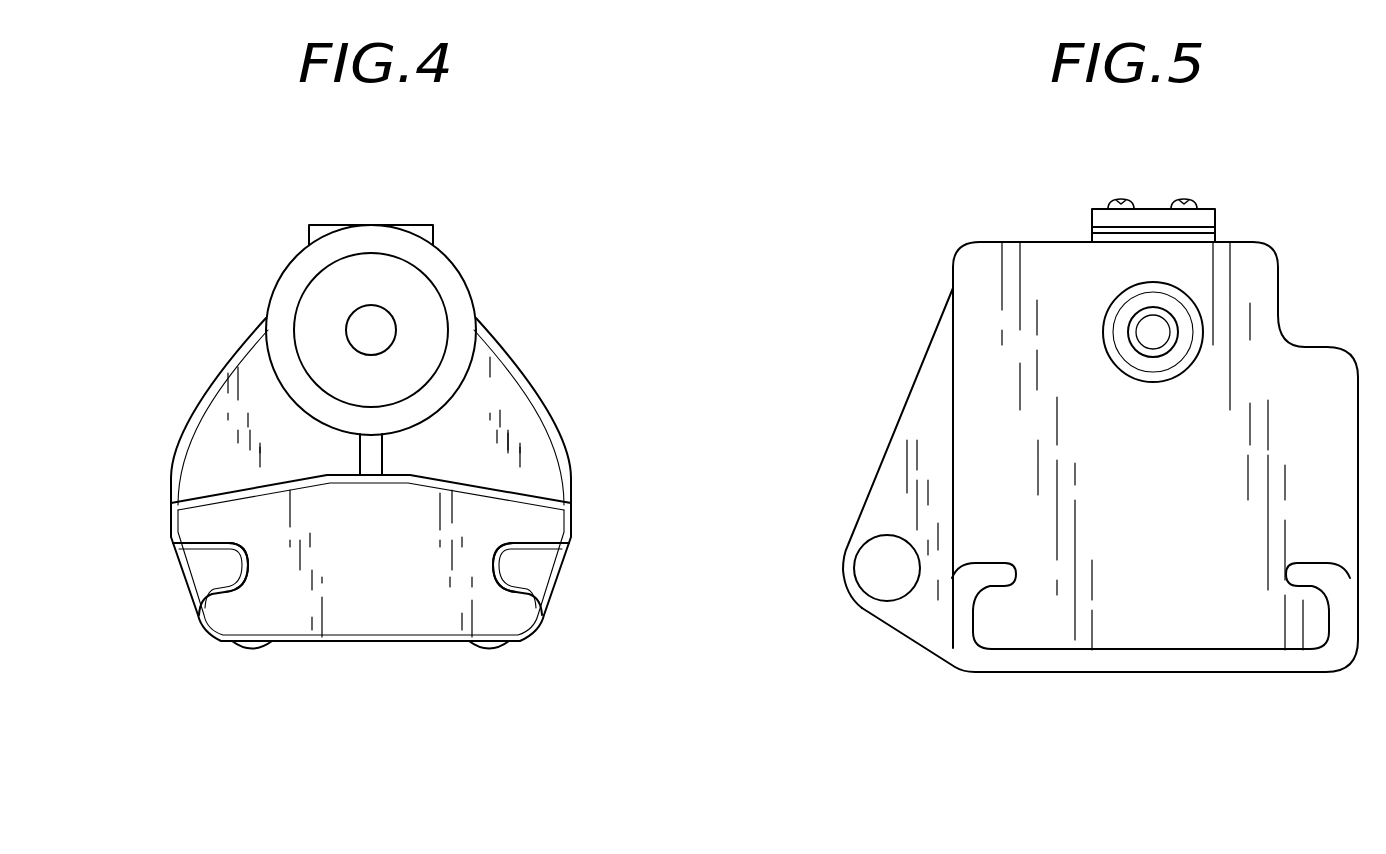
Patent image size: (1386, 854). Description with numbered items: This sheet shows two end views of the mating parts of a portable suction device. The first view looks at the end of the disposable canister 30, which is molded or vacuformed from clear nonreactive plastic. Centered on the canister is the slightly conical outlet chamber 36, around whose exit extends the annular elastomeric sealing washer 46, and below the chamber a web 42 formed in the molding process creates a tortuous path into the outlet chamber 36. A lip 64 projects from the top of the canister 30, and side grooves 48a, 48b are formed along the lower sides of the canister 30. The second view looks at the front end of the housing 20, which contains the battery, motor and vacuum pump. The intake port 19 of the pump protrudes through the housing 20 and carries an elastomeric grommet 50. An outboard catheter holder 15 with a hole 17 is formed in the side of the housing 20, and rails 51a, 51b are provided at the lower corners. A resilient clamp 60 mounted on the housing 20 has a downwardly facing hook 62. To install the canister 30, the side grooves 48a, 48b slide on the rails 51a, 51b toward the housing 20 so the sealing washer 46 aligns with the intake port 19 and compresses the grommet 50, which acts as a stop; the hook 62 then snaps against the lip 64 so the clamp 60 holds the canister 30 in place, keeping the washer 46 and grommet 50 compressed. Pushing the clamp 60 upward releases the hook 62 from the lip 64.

In FIG. 4, the disposable canister 30 is at (612, 459).
In FIG. 4, the outlet chamber 36 is at (438, 265).
In FIG. 4, the sealing washer 46 is at (422, 332).
In FIG. 4, the lip 64 is at (420, 225).
In FIG. 4, the web 42 is at (372, 460).
In FIG. 4, the side groove 48a is at (210, 568).
In FIG. 4, the side groove 48b is at (530, 568).
In FIG. 5, the housing 20 is at (1010, 242).
In FIG. 5, the outboard catheter holder 15 is at (918, 620).
In FIG. 5, the hole 17 is at (885, 578).
In FIG. 5, the elastomeric grommet 50 is at (1115, 307).
In FIG. 5, the intake port 19 is at (1168, 353).
In FIG. 5, the hook 62 is at (1205, 220).
In FIG. 5, the resilient clamp 60 is at (1160, 208).
In FIG. 5, the rail 51a is at (1027, 587).
In FIG. 5, the rail 51b is at (1285, 590).